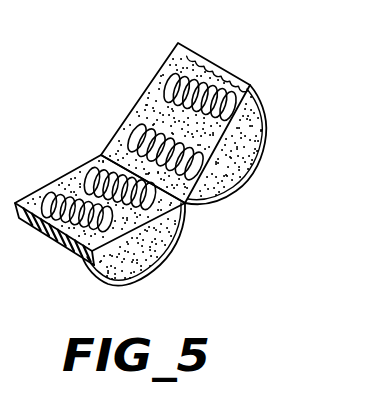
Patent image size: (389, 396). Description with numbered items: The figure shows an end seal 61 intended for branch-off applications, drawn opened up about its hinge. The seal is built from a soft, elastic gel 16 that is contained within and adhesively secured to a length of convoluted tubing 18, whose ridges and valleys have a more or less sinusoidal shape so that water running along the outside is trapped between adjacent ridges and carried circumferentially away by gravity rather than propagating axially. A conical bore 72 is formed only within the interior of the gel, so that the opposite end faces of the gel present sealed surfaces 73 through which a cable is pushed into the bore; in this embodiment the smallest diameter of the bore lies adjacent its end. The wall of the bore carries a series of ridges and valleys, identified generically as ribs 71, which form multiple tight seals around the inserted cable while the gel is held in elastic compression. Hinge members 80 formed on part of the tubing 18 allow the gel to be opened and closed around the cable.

The folding contact pad assembly 61 is at (132, 165).
The ribs 71 is at (165, 78).
The bore 72 is at (67, 187).
The sealed surfaces 73 is at (95, 153).
The convoluted tubing 18 is at (82, 266).
The gel 16 is at (167, 246).
The hinge members 80 is at (197, 205).